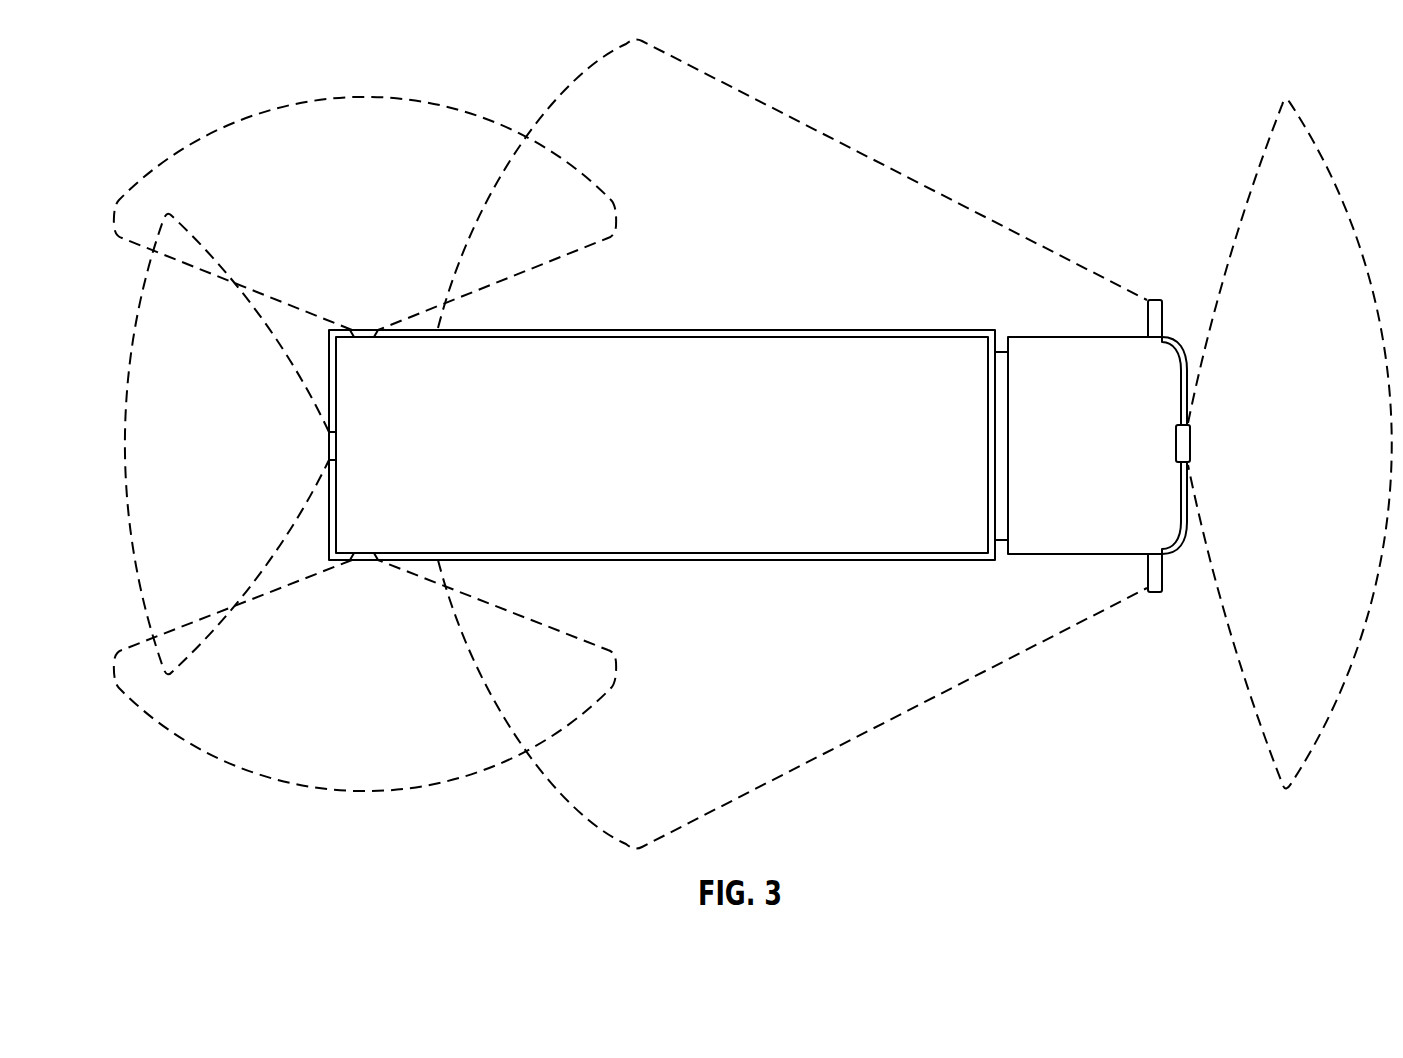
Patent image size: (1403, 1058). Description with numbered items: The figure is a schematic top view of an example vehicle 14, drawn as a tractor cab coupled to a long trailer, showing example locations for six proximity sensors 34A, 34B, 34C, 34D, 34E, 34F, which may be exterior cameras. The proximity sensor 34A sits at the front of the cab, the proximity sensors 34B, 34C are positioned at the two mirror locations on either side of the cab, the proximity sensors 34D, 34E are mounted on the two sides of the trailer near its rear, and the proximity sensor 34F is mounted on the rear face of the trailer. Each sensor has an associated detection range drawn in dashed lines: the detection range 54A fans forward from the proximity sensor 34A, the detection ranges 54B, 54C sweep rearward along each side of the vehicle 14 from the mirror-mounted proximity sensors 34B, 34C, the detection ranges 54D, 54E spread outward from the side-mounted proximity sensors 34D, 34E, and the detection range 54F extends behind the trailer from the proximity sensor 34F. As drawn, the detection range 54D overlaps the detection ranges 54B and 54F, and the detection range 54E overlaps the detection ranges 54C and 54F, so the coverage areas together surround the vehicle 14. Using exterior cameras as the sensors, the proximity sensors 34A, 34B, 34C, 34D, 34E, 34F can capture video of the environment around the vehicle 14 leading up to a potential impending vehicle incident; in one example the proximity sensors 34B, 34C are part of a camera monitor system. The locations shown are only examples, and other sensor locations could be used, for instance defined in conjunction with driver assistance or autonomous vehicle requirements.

The vehicle 14 is at (758, 445).
The proximity sensor 34A is at (1175, 443).
The proximity sensor 34B is at (1153, 326).
The proximity sensor 34C is at (1153, 570).
The proximity sensor 34D is at (367, 338).
The proximity sensor 34E is at (364, 552).
The proximity sensor 34F is at (337, 446).
The detection range 54A is at (1290, 443).
The detection range 54B is at (792, 184).
The detection range 54C is at (792, 704).
The detection range 54D is at (365, 213).
The detection range 54E is at (365, 675).
The detection range 54F is at (227, 444).